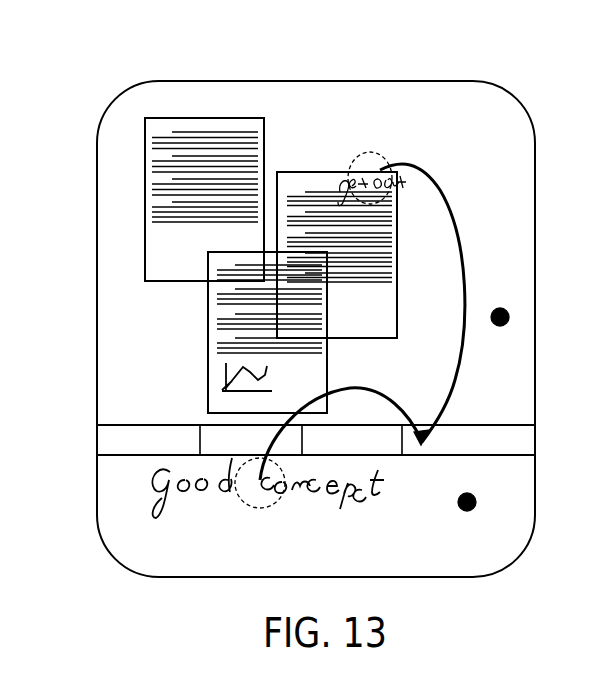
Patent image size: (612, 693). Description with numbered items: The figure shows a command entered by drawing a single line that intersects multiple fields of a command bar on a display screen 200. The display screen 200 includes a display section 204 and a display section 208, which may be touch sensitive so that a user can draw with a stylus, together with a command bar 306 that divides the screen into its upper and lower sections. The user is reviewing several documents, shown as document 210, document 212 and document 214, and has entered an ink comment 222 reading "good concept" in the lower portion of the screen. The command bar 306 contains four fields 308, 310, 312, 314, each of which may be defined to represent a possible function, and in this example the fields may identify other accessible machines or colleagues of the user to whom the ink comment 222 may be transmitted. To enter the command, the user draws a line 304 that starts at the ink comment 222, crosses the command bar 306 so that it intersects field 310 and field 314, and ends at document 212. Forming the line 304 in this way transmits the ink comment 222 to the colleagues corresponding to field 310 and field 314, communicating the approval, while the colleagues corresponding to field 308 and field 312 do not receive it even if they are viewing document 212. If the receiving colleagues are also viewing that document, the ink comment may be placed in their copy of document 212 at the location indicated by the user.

The display screen 200 is at (84, 96).
The display section 204 is at (503, 308).
The display section 208 is at (464, 512).
The document 210 is at (197, 118).
The document 212 is at (332, 172).
The document 214 is at (208, 323).
The ink comment 222 is at (205, 505).
The line 304 is at (460, 234).
The command bar 306 is at (476, 425).
The field 308 is at (162, 452).
The field 310 is at (264, 452).
The field 312 is at (364, 452).
The field 314 is at (464, 452).